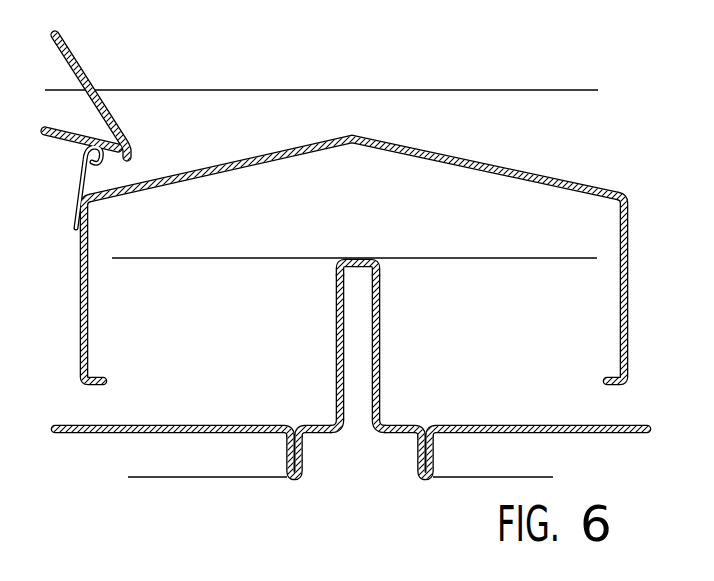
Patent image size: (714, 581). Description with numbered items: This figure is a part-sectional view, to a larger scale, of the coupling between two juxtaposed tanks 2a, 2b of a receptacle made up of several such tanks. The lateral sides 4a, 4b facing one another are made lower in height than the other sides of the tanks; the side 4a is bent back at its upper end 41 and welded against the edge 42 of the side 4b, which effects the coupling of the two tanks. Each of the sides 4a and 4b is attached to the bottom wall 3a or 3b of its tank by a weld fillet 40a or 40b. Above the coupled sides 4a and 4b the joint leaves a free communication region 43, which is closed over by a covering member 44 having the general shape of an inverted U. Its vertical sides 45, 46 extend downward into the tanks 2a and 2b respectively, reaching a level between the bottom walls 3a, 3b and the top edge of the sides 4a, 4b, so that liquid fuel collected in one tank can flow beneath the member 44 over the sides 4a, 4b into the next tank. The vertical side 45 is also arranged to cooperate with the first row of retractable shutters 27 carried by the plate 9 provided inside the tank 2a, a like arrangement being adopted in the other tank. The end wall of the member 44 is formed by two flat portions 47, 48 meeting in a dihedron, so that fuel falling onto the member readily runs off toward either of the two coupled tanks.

The tank 2a is at (193, 457).
The tank 2b is at (510, 457).
The bottom wall 3a is at (199, 425).
The bottom wall 3b is at (467, 425).
The lateral side 4a is at (337, 344).
The lateral side 4b is at (380, 333).
The plate 9 is at (80, 131).
The retractable shutters 27 is at (74, 222).
The weld fillet 40a is at (294, 478).
The weld fillet 40b is at (425, 478).
The upper end 41 is at (341, 259).
The edge 42 is at (381, 261).
The free communication region 43 is at (217, 229).
The covering member 44 is at (354, 243).
The vertical side 45 is at (88, 332).
The vertical side 46 is at (620, 334).
The flat portion 47 is at (258, 156).
The flat portion 48 is at (450, 158).